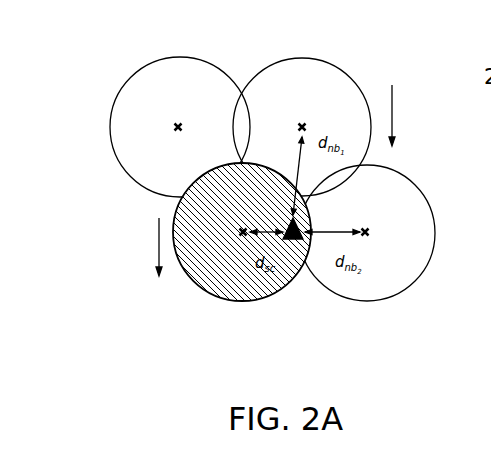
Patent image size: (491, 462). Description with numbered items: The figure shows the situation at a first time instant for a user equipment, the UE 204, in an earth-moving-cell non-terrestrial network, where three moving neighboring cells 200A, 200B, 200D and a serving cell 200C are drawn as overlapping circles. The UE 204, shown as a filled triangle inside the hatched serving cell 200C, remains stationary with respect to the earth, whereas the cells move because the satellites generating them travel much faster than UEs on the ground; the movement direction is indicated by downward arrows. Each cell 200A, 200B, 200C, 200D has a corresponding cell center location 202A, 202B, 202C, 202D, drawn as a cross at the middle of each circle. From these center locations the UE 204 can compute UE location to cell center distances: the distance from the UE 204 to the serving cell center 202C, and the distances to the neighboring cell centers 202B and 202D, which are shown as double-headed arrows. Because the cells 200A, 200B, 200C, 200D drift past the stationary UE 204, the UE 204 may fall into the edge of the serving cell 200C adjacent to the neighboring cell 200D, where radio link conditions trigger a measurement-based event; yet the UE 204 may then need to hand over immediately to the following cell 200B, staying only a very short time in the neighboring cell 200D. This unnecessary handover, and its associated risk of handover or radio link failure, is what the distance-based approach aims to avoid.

The moving neighboring cell 200A is at (136, 69).
The moving neighboring cell 200B is at (350, 74).
The serving cell 200C is at (189, 279).
The moving neighboring cell 200D is at (404, 172).
The cell center location 202A is at (181, 126).
The cell center location 202B is at (305, 126).
The cell center location 202C is at (242, 234).
The cell center location 202D is at (368, 238).
The UE 204 is at (293, 240).